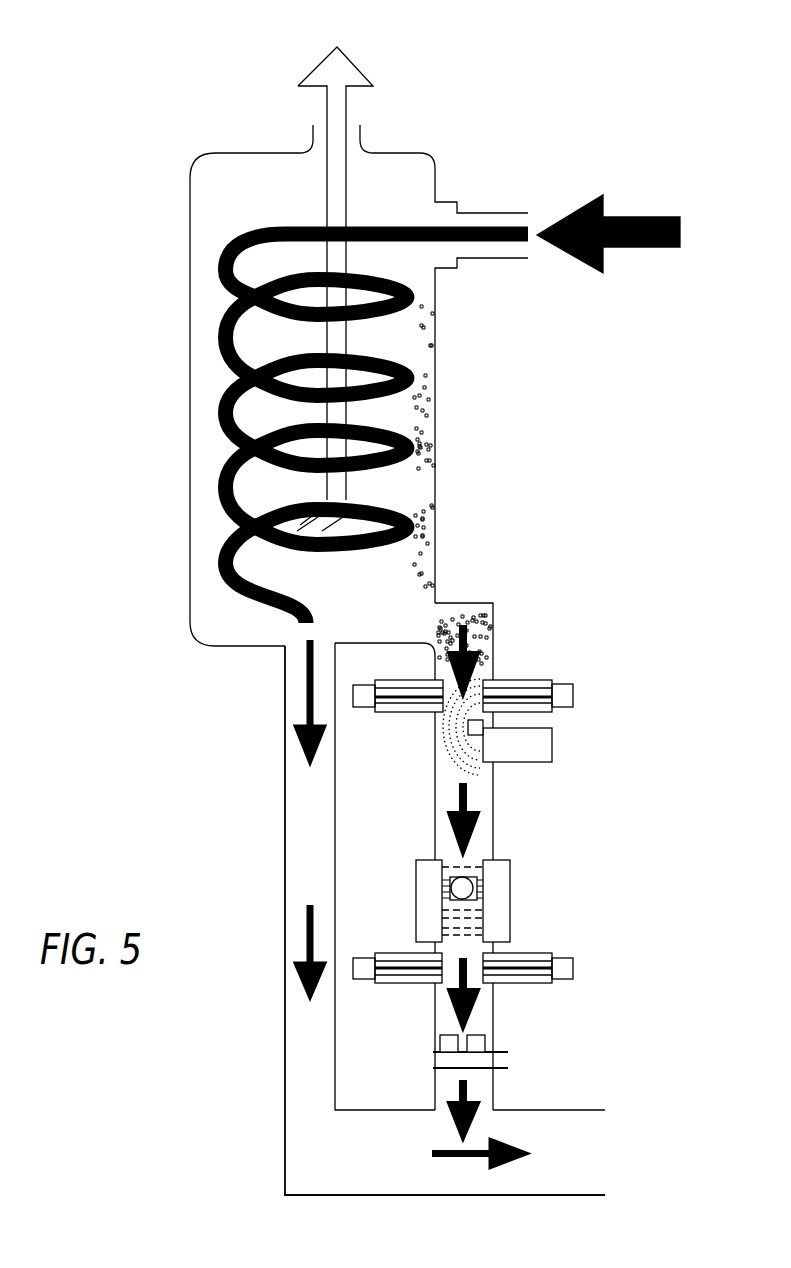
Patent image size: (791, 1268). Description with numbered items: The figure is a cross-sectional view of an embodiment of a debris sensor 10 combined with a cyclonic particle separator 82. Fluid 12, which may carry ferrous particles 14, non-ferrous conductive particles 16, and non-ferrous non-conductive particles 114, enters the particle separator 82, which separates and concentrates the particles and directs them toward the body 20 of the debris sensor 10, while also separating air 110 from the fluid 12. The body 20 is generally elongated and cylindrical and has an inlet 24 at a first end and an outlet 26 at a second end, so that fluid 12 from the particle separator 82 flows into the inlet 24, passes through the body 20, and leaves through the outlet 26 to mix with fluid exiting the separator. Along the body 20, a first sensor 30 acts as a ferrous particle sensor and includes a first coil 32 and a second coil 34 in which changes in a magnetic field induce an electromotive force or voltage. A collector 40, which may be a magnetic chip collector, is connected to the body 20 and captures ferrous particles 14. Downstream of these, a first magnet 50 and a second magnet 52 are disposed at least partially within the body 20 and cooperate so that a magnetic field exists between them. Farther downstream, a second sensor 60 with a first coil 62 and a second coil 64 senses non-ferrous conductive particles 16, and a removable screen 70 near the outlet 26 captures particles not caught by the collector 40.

The debris sensor 10 is at (586, 609).
The fluid 12 is at (646, 216).
The ferrous particles 14 is at (414, 344).
The non-ferrous conductive particles 16 is at (471, 872).
The body 20 is at (495, 778).
The inlet 24 is at (497, 595).
The outlet 26 is at (499, 1106).
The first sensor 30 is at (525, 707).
The first coil 32 is at (383, 719).
The second coil 34 is at (583, 674).
The collector 40 is at (554, 740).
The first magnet 50 is at (415, 882).
The second magnet 52 is at (523, 878).
The second sensor 60 is at (500, 970).
The first coil 62 is at (402, 994).
The second coil 64 is at (546, 991).
The screen 70 is at (528, 1055).
The particle separator 82 is at (463, 108).
The air 110 is at (374, 43).
The non-ferrous non-conductive particles 114 is at (440, 1045).